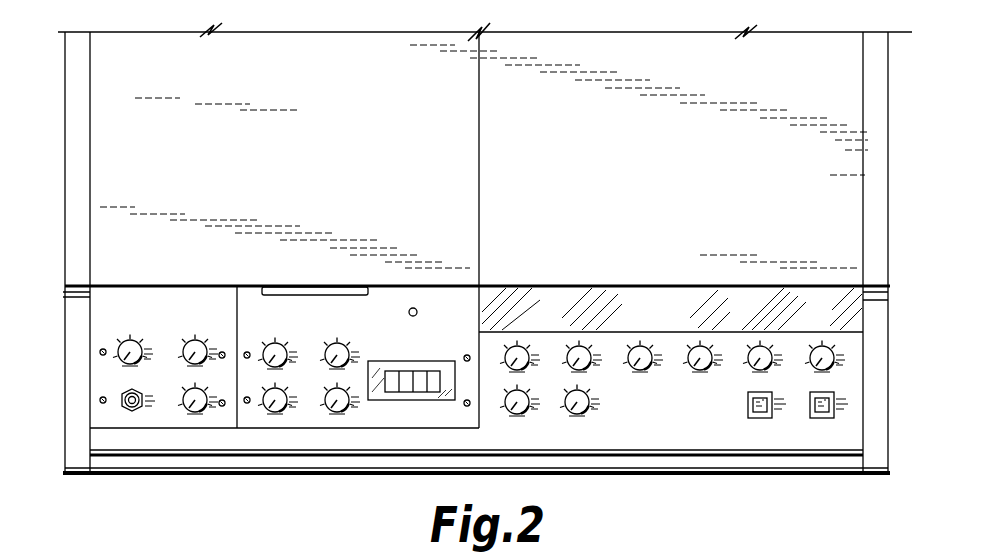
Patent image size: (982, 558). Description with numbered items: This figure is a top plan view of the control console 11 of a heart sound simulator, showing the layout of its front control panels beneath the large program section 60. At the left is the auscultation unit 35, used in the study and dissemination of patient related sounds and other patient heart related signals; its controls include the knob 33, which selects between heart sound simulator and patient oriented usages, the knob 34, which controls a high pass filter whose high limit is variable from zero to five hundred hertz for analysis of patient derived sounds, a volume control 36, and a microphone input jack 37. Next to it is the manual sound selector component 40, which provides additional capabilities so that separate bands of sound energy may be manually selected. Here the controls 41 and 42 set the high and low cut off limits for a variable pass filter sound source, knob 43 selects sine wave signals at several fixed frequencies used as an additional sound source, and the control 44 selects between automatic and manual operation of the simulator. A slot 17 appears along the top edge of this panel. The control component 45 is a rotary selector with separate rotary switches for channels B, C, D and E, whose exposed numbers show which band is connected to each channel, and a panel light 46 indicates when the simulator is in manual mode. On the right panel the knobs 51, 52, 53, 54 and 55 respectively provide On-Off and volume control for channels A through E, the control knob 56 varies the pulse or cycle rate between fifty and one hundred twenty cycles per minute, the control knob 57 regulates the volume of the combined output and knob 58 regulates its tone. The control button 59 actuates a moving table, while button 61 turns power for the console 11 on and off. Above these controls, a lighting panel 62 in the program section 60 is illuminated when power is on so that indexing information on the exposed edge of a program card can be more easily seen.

The console 11 is at (632, 40).
The slot 17 is at (307, 290).
The knob 33 is at (133, 344).
The knob 34 is at (196, 342).
The auscultation unit 35 is at (120, 305).
The volume control 36 is at (197, 412).
The microphone input jack 37 is at (128, 411).
The manual sound selector component 40 is at (388, 308).
The control 41 is at (280, 345).
The control 42 is at (333, 345).
The knob 43 is at (343, 412).
The control 44 is at (283, 412).
The control component 45 is at (413, 394).
The panel light 46 is at (416, 309).
The knob 51 is at (588, 368).
The knob 52 is at (634, 350).
The knob 53 is at (702, 371).
The knob 54 is at (758, 348).
The knob 55 is at (820, 350).
The control knob 56 is at (510, 350).
The control knob 57 is at (507, 406).
The knob 58 is at (590, 412).
The control button 59 is at (750, 418).
The program section 60 is at (702, 185).
The button 61 is at (817, 419).
The lighting panel 62 is at (623, 300).